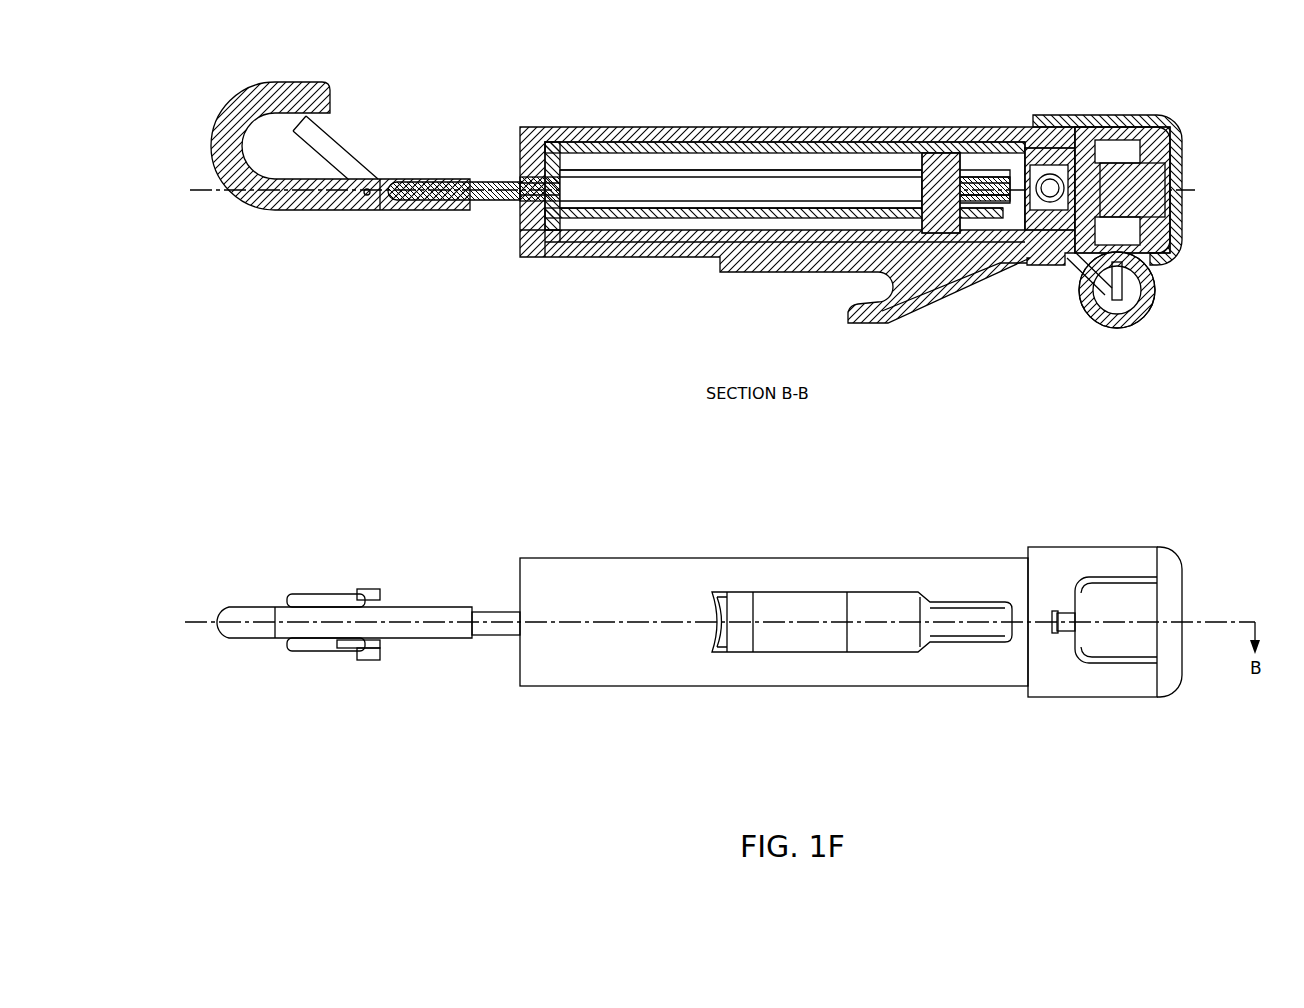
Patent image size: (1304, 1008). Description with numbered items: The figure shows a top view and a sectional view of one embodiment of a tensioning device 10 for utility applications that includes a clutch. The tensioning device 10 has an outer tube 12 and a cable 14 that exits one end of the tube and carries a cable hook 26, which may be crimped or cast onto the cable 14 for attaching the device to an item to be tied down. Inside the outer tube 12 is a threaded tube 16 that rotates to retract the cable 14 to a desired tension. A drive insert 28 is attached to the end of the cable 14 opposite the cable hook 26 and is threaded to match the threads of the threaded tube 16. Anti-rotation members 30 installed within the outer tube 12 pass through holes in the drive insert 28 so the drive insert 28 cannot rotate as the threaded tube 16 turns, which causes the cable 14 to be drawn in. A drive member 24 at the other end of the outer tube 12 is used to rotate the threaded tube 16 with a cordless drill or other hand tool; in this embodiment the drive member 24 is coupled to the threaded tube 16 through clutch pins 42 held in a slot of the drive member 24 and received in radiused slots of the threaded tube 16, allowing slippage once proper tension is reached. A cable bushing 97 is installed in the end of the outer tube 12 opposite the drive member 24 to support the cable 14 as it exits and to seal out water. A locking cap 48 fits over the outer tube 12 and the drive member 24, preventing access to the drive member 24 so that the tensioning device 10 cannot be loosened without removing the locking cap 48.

The tensioning device 10 is at (650, 327).
The outer tube 12 is at (758, 127).
The cable 14 is at (497, 178).
The threaded tube 16 is at (872, 147).
The drive member 24 is at (1157, 213).
The cable hook 26 is at (262, 207).
The drive insert 28 is at (944, 160).
The anti-rotation member 30 is at (573, 218).
The clutch pin 42 is at (1050, 186).
The locking cap 48 is at (1178, 120).
The cable bushing 97 is at (540, 240).